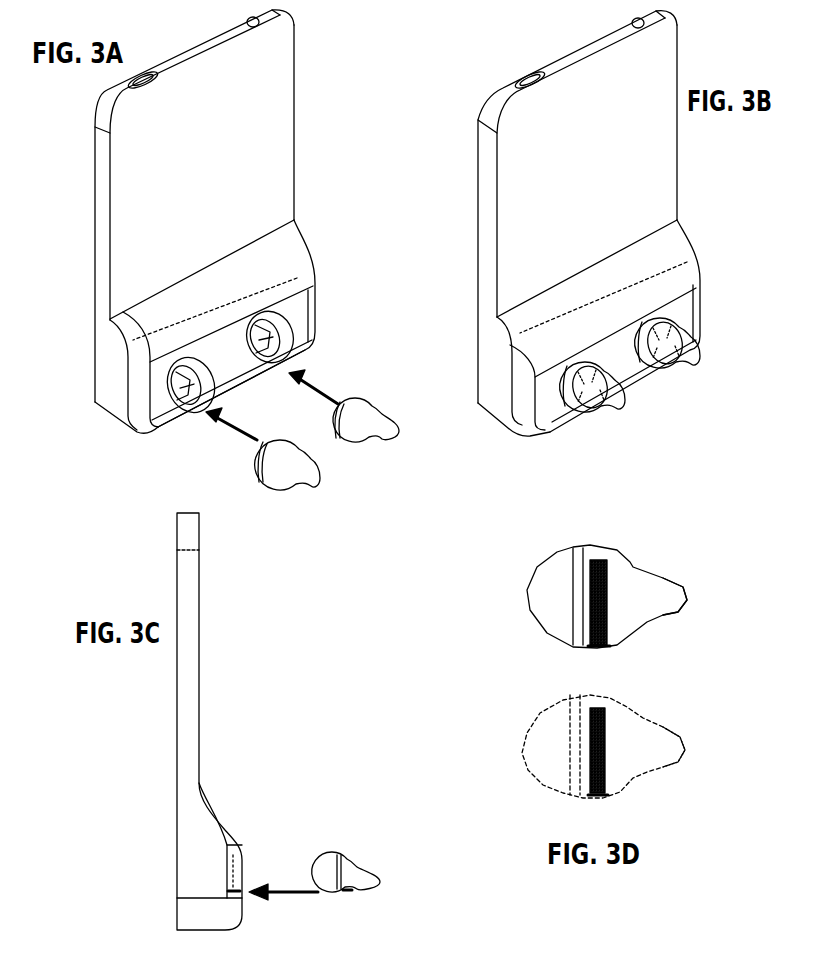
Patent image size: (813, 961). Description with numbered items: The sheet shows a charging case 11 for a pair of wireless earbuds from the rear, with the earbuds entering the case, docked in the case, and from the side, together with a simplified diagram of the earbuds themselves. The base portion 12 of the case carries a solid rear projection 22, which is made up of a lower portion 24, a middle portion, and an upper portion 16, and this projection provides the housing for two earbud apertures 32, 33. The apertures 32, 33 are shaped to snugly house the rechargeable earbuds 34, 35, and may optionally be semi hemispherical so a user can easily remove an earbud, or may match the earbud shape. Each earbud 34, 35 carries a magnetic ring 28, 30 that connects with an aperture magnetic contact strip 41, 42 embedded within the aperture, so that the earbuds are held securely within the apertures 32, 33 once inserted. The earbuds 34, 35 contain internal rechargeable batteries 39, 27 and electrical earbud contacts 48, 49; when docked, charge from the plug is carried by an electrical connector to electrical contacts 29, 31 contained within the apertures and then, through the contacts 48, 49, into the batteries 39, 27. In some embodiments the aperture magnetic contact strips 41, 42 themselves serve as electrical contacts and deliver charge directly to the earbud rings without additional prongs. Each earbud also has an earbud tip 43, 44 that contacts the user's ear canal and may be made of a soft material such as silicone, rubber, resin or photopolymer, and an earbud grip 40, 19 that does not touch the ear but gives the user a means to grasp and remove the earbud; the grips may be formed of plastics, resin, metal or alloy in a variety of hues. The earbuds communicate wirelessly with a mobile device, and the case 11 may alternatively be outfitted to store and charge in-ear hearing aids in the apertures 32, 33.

In FIG. 3B, the case 11 is at (473, 207).
In FIG. 3C, the case 11 is at (214, 588).
In FIG. 3A, the base portion 12 is at (103, 385).
In FIG. 3A, the upper portion 16 is at (157, 311).
In FIG. 3D, the earbud grip 19 is at (632, 592).
In FIG. 3A, the rear projection 22 is at (170, 355).
In FIG. 3B, the rear projection 22 is at (670, 270).
In FIG. 3A, the lower portion 24 is at (170, 427).
In FIG. 3D, the rechargeable earbud battery 27 is at (603, 768).
In FIG. 3A, the magnetic ring 28 is at (263, 458).
In FIG. 3D, the magnetic ring 28 is at (578, 593).
In FIG. 3A, the electrical contact 29 is at (180, 393).
In FIG. 3A, the magnetic ring 30 is at (363, 398).
In FIG. 3D, the magnetic ring 30 is at (594, 755).
In FIG. 3A, the electrical contact 31 is at (260, 353).
In FIG. 3A, the earbud aperture 32 is at (187, 377).
In FIG. 3A, the earbud aperture 33 is at (270, 327).
In FIG. 3B, the rechargeable earbud 34 is at (581, 412).
In FIG. 3C, the rechargeable earbud 34 is at (345, 838).
In FIG. 3D, the rechargeable earbud 34 is at (583, 589).
In FIG. 3B, the rechargeable earbud 35 is at (695, 338).
In FIG. 3D, the rechargeable earbud 35 is at (649, 780).
In FIG. 3D, the rechargeable earbud battery 39 is at (603, 605).
In FIG. 3D, the earbud grip 40 is at (637, 748).
In FIG. 3A, the aperture magnetic contact strip 41 is at (172, 383).
In FIG. 3A, the aperture magnetic contact strip 42 is at (277, 318).
In FIG. 3D, the earbud tip 43 is at (553, 570).
In FIG. 3D, the earbud tip 44 is at (560, 785).
In FIG. 3D, the electrical earbud contact 48 is at (599, 655).
In FIG. 3D, the electrical earbud contact 49 is at (597, 804).